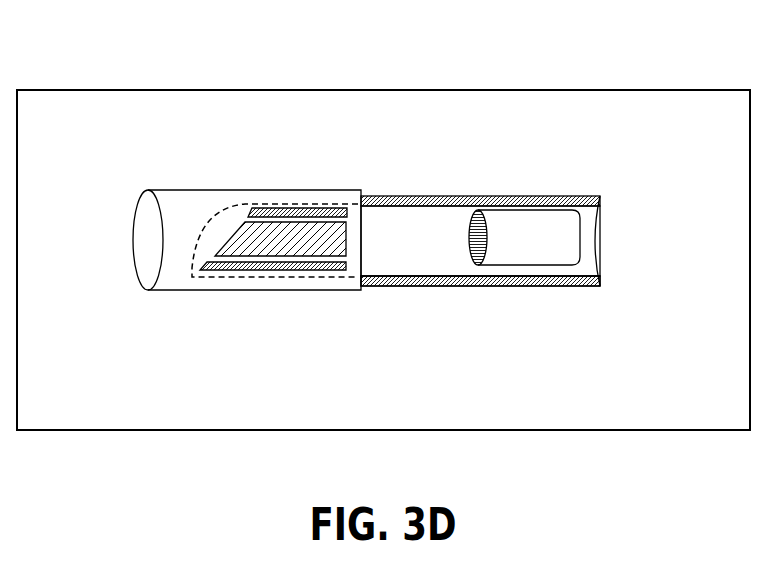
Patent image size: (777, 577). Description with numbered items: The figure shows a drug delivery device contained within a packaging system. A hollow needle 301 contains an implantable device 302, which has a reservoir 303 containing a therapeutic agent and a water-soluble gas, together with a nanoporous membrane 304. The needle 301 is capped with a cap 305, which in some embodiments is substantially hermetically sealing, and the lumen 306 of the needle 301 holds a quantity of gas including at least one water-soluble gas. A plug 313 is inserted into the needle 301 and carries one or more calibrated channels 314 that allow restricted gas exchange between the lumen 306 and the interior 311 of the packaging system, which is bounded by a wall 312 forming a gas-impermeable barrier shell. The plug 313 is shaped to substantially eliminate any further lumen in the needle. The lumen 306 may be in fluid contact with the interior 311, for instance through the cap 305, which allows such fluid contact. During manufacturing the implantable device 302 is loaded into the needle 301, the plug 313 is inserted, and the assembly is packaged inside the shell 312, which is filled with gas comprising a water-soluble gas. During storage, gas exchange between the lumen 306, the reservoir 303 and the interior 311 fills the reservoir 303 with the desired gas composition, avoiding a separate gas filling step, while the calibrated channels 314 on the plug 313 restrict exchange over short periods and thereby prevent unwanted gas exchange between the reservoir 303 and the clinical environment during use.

The hollow needle 301 is at (392, 195).
The implantable device 302 is at (542, 265).
The reservoir 303 is at (540, 228).
The nanoporous membrane 304 is at (488, 230).
The cap 305 is at (165, 290).
The lumen 306 is at (405, 260).
The interior of packaging system 311 is at (62, 165).
The wall of packaging system 312 is at (183, 95).
The plug 313 is at (273, 248).
The calibrated channels 314 is at (294, 205).